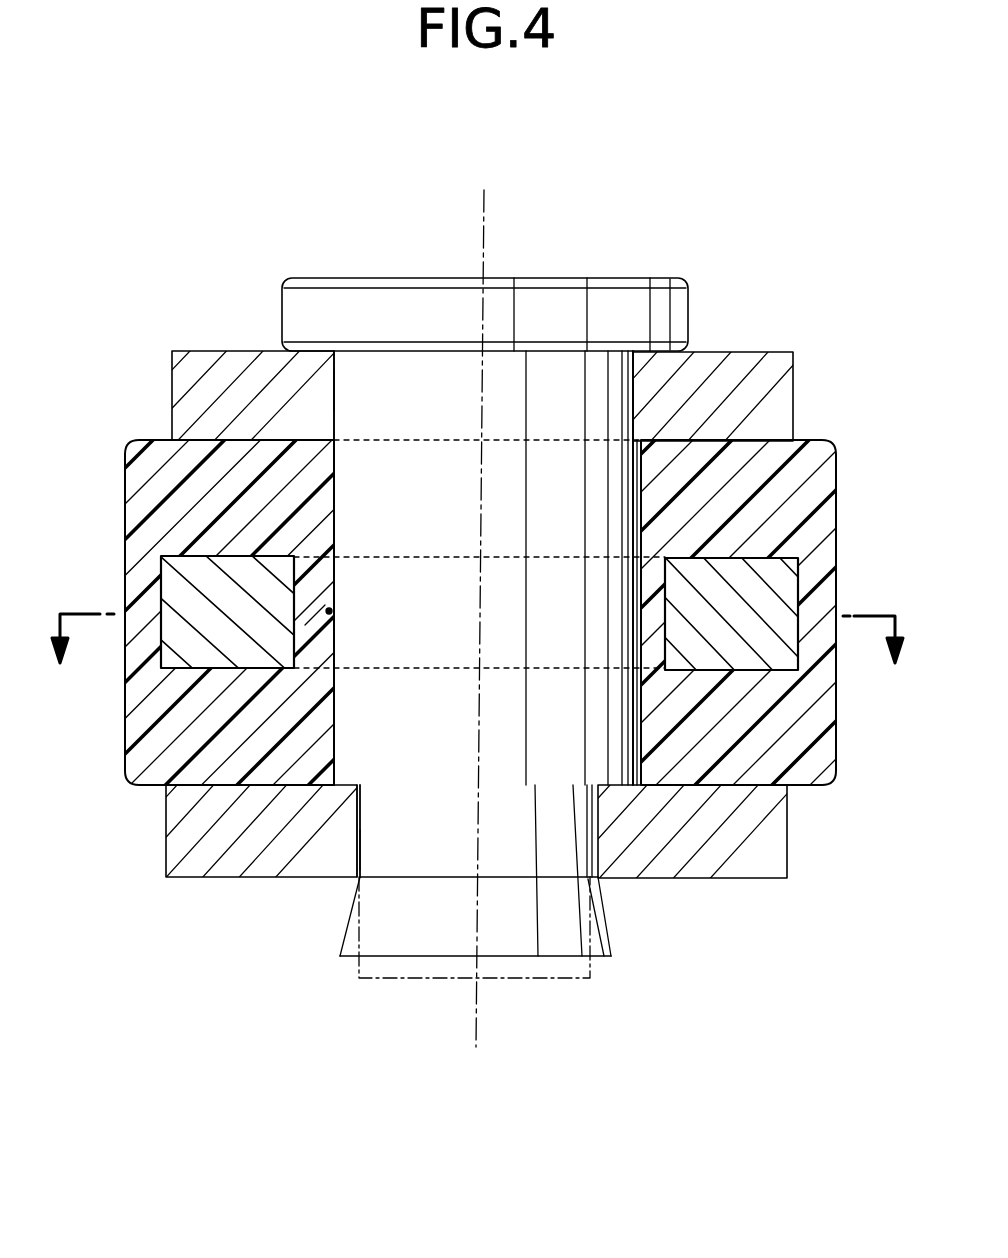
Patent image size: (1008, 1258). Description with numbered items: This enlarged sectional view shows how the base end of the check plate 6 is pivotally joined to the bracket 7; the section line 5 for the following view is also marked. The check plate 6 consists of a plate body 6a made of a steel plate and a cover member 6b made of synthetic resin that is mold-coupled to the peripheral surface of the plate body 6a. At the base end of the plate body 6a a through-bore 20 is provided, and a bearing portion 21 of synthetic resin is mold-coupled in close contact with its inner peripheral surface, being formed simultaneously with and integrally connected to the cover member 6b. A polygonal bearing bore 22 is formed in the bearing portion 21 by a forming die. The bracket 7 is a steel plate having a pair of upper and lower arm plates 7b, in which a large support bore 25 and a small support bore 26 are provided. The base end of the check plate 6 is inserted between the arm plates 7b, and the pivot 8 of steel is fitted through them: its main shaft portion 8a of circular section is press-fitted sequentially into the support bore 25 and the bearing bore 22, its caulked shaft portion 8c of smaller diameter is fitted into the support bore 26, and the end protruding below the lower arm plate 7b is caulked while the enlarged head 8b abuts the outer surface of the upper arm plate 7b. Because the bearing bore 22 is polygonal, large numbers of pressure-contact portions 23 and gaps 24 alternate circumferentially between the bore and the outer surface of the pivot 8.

The section line 5- 5 is at (483, 611).
The check plate 6 is at (903, 788).
The plate body 6a is at (802, 760).
The cover member 6b is at (780, 651).
The bracket 7 is at (750, 352).
The arm plates 7b is at (200, 362).
The pivot 8 is at (625, 277).
The main shaft portion 8a is at (501, 544).
The enlarged head 8b is at (385, 298).
The caulked shaft portion 8c is at (502, 980).
The through-bore 20 is at (665, 625).
The bearing portion 21 is at (313, 618).
The bearing bore 22 is at (333, 727).
The pressure-contact portions 23 is at (330, 610).
The gaps 24 is at (637, 590).
The large support bore 25 is at (333, 392).
The small support bore 26 is at (358, 842).